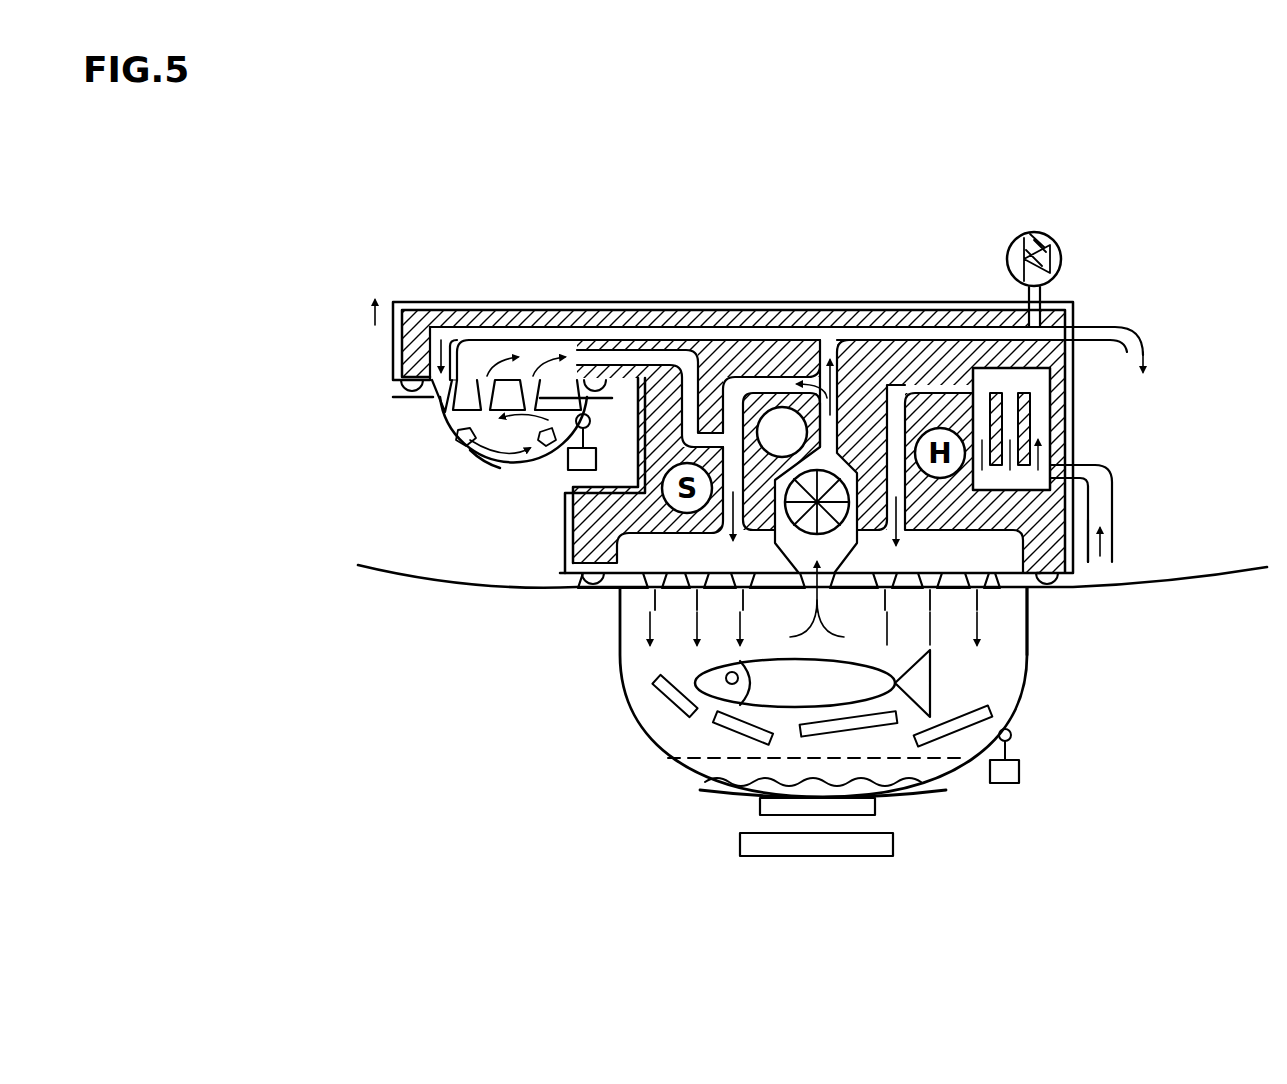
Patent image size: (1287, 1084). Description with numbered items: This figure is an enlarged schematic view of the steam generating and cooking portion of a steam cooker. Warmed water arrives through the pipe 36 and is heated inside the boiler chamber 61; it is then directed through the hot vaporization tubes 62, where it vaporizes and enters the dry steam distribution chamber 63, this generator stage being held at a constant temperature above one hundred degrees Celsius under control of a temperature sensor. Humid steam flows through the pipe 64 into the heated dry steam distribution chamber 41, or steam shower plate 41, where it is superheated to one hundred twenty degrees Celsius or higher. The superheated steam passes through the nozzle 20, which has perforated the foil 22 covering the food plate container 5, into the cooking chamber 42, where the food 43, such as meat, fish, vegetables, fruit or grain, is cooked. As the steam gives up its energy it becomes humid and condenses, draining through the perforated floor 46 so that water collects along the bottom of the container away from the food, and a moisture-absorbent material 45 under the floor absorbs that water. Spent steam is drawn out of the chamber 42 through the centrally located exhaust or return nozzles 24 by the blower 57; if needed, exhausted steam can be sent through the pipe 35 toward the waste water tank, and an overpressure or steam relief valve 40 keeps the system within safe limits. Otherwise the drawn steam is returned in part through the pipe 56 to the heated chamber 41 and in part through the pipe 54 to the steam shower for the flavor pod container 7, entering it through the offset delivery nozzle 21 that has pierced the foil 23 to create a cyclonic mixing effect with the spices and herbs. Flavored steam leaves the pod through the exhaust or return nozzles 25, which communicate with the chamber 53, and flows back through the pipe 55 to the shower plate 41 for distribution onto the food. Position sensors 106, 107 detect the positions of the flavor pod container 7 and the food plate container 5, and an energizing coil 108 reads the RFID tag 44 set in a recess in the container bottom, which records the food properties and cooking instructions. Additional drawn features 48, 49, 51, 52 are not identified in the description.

The food plate container 5 is at (417, 578).
The flavor pod container 7 is at (478, 470).
The nozzle 20 is at (648, 598).
The delivery nozzle 21 is at (438, 403).
The foil 22 is at (700, 604).
The foil 23 is at (445, 415).
The exhaust or return nozzles 24 is at (760, 603).
The exhaust or return nozzles 25 is at (455, 448).
The pipe 35 is at (1118, 327).
The pipe 36 is at (1145, 541).
The overpressure or steam relief valve 40 is at (1058, 243).
The dry steam distribution chamber 41 is at (978, 560).
The cooking chamber 42 is at (985, 663).
The food 43 is at (932, 737).
The RFID tag 44 is at (757, 808).
The moisture-absorbent material 45 is at (717, 793).
The perforated floor 46 is at (705, 785).
The nozzle plate 48 is at (570, 585).
The container bottom 49 is at (460, 462).
The supply plate 51 is at (393, 397).
The housing 52 is at (393, 356).
The chamber 53 is at (510, 348).
The pipe 54 is at (583, 333).
The pipe 55 is at (662, 358).
The pipe 56 is at (780, 384).
The blower 57 is at (862, 420).
The boiler chamber 61 is at (1040, 473).
The hot vaporization tubes 62 is at (1042, 432).
The dry steam distribution chamber 63 is at (1032, 378).
The pipe 64 is at (897, 415).
The position sensor 106 is at (570, 468).
The position sensor 107 is at (1010, 785).
The energizing coil 108 is at (817, 857).